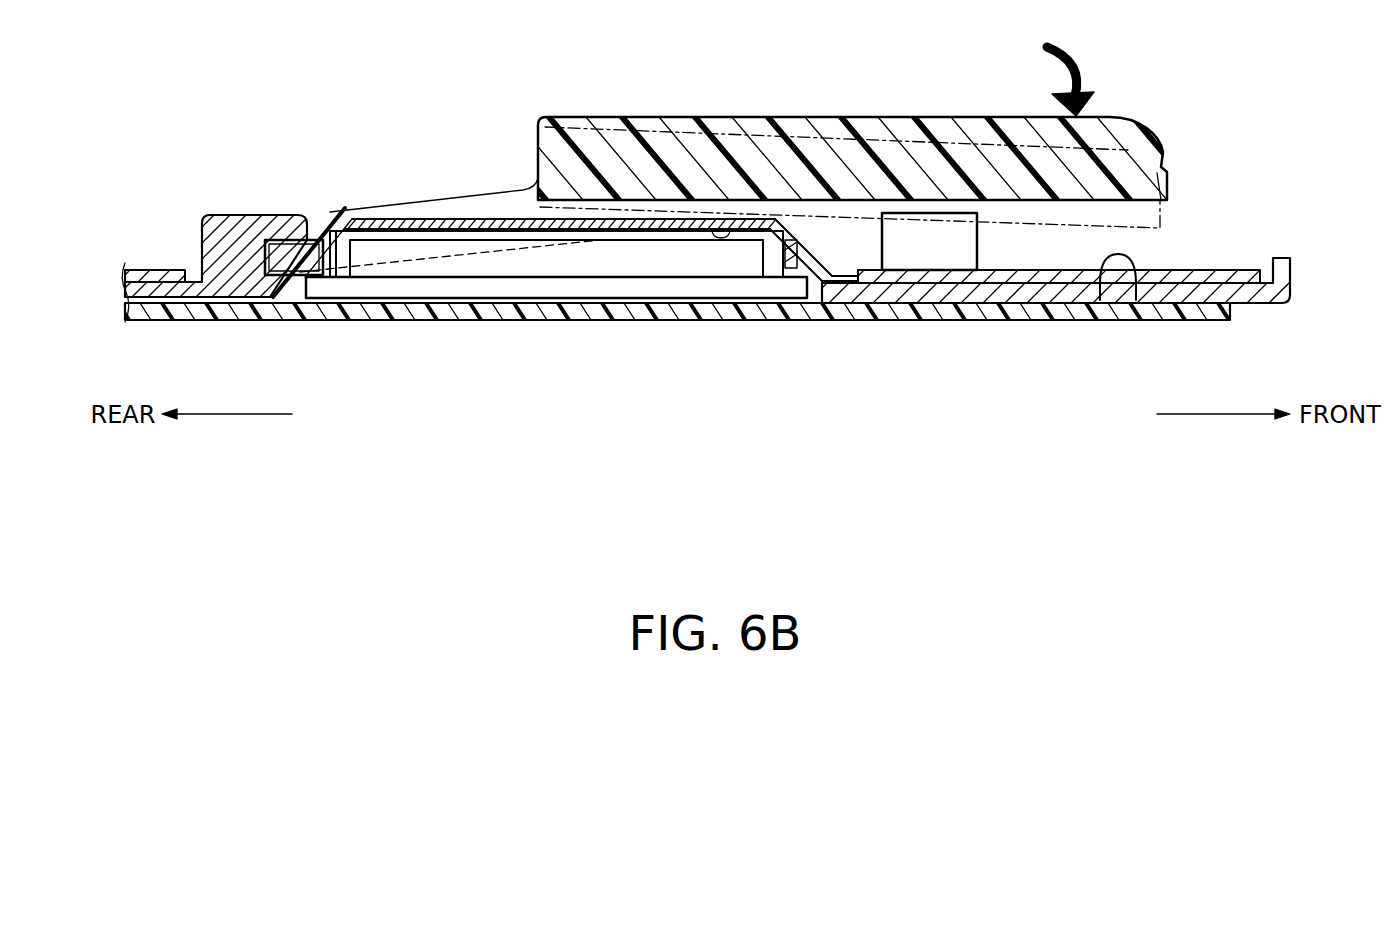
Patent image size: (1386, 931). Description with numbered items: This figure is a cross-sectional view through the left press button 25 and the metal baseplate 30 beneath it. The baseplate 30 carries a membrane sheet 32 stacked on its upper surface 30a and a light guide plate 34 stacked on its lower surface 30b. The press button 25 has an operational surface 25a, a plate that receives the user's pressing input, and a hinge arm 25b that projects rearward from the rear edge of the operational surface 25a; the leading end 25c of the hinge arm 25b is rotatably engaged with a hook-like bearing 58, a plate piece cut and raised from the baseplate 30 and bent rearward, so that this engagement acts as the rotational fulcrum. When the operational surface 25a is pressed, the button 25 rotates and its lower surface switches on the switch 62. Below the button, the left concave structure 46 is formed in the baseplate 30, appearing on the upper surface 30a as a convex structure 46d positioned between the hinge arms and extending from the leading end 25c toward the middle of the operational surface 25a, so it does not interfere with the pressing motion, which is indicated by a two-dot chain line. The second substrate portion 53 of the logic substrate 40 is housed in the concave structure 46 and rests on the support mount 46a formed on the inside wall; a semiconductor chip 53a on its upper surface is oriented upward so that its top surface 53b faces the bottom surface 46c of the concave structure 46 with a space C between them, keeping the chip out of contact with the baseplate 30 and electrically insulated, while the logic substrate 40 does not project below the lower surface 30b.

The left press button 25 is at (961, 112).
The operational surface 25a is at (851, 117).
The hinge arm 25b is at (407, 207).
The leading end of hinge arm 25c is at (276, 257).
The baseplate 30 is at (1052, 290).
The upper surface of the baseplate 30a is at (1112, 266).
The lower surface of the baseplate 30b is at (886, 288).
The membrane sheet 32 is at (157, 268).
The light guide plate 34 is at (1105, 312).
The logic substrate 40 is at (553, 306).
The left concave structure 46 is at (574, 227).
The support mount 46a is at (300, 287).
The bottom surface of the concave structure 46c is at (655, 243).
The convex structure 46d is at (443, 220).
The second substrate portion 53 is at (553, 306).
The semiconductor chip 53a is at (638, 274).
The top surface of the semiconductor chip 53b is at (378, 242).
The hook-like bearing 58 is at (290, 216).
The switch 62 is at (945, 264).
The space C is at (497, 231).